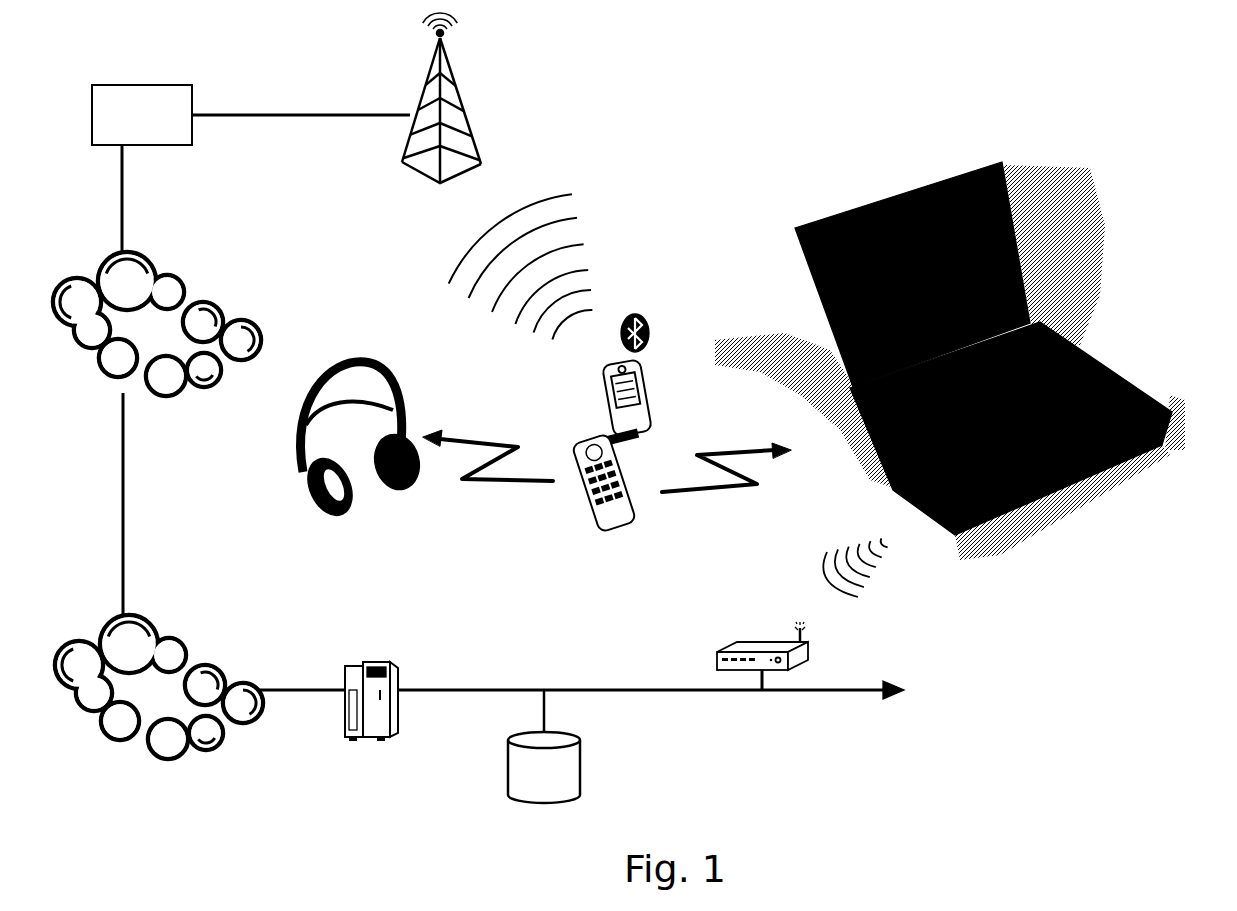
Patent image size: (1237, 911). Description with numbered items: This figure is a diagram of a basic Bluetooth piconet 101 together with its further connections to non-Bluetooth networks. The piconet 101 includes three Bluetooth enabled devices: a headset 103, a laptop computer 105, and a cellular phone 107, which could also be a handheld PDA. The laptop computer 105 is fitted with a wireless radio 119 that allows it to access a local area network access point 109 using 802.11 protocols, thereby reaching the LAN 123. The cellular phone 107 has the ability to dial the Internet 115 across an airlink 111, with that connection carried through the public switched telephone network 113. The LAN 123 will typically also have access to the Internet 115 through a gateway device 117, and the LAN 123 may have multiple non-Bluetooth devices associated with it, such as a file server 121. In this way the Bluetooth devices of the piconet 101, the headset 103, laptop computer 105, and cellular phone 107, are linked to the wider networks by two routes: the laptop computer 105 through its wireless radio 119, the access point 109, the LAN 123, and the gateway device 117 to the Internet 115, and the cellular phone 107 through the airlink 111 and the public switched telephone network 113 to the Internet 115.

The piconet 101 is at (1088, 83).
The headset 103 is at (342, 358).
The laptop computer 105 is at (1038, 303).
The cellular phone 107 is at (640, 305).
The local area network access point 109 is at (741, 655).
The airlink 111 is at (570, 223).
The public switched telephone network 113 is at (251, 350).
The Internet 115 is at (158, 505).
The gateway device 117 is at (358, 733).
The wireless radio 119 is at (892, 560).
The file server 121 is at (544, 746).
The LAN 123 is at (695, 698).